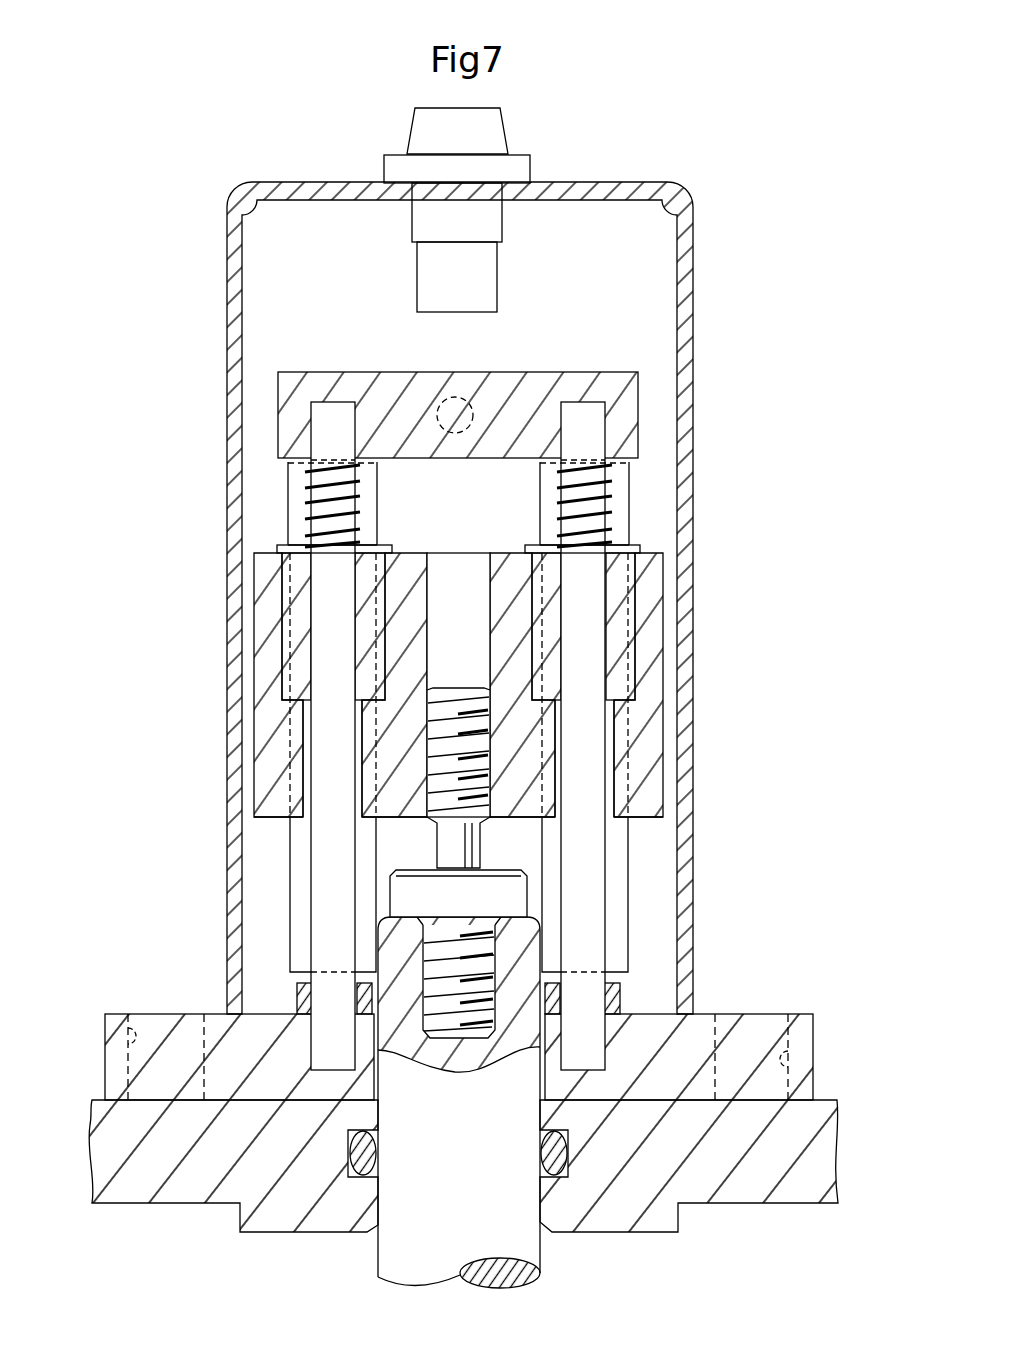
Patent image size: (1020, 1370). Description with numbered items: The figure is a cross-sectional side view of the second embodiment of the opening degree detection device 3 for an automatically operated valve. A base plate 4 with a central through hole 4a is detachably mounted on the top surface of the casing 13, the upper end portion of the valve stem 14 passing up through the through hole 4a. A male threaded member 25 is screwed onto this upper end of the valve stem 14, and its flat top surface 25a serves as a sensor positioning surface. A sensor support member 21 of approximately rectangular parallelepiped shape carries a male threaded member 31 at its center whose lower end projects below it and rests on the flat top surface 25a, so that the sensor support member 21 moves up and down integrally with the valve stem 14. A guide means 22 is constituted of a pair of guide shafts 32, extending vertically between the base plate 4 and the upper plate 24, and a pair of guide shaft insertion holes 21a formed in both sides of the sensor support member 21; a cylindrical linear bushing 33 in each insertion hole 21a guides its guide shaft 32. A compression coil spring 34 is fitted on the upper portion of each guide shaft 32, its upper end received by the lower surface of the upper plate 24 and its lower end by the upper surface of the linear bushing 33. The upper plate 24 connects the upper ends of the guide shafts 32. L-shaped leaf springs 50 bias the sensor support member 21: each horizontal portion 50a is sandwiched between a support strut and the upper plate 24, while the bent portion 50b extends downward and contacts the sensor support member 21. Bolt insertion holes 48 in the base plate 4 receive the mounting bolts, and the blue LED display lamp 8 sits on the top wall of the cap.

The opening degree detection device 3 is at (710, 541).
The base plate 4 is at (803, 1031).
The through hole 4a is at (535, 1062).
The blue LED display lamp 8 is at (502, 125).
The casing 13 is at (798, 1162).
The valve stem 14 is at (545, 1247).
The sensor support member 21 is at (665, 748).
The guide shaft insertion holes 21a is at (310, 716).
The guide means 22 is at (609, 863).
The upper plate 24 is at (625, 401).
The male threaded member 25 is at (487, 950).
The flat top surface 25a is at (507, 858).
The male threaded member 31 is at (450, 852).
The guide shafts 32 is at (330, 777).
The linear bushing 33 is at (298, 631).
The compression coil spring 34 is at (308, 505).
The bolt insertion holes 48 is at (128, 1052).
The leaf springs 50 is at (620, 880).
The horizontal portion 50a is at (283, 548).
The bent portion 50b is at (303, 829).